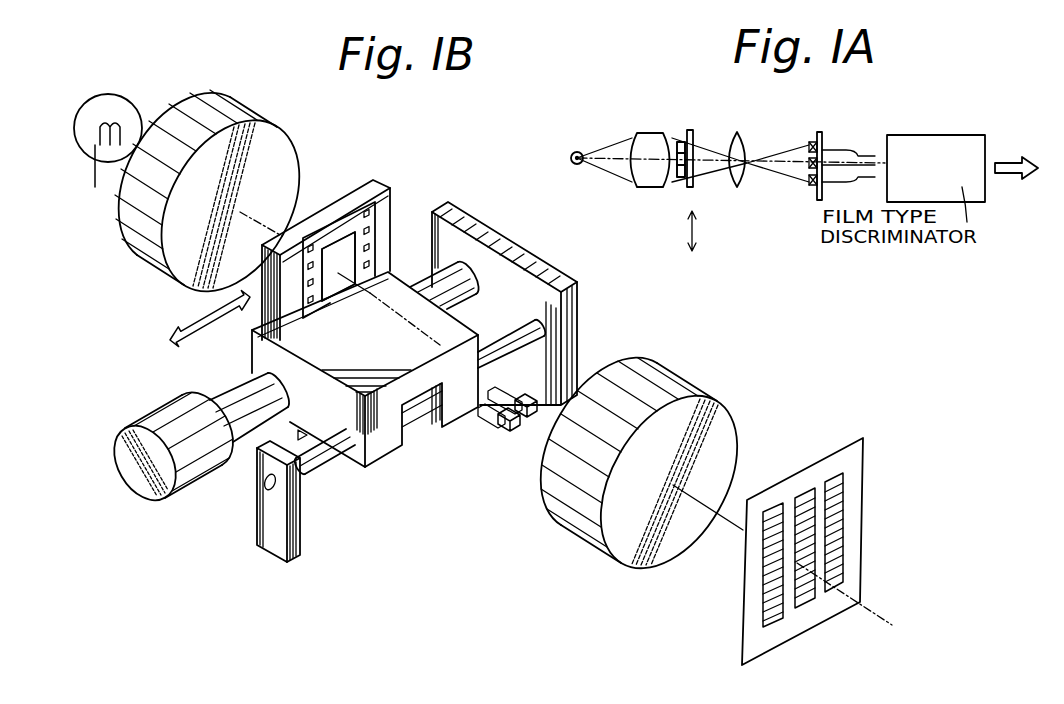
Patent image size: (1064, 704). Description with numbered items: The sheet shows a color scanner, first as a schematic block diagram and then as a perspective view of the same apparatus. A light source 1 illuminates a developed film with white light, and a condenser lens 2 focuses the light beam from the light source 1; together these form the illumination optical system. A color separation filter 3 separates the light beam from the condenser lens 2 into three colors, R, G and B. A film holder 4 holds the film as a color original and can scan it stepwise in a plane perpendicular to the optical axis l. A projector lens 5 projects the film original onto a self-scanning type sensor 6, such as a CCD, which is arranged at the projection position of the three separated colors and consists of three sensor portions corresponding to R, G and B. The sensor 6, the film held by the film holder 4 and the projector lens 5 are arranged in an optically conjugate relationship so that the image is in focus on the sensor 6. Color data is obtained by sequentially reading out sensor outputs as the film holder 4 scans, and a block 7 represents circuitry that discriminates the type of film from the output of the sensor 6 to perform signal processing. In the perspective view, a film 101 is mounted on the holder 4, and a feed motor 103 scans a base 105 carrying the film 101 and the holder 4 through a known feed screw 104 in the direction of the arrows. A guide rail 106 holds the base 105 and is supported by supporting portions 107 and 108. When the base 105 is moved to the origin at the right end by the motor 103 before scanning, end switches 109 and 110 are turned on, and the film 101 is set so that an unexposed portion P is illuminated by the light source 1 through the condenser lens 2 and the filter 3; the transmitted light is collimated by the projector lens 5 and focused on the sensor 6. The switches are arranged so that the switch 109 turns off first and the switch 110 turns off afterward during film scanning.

In FIG. 1A, the light source 1 is at (574, 165).
In FIG. 1B, the light source 1 is at (134, 108).
In FIG. 1A, the condenser lens 2 is at (640, 134).
In FIG. 1B, the condenser lens 2 is at (256, 116).
In FIG. 1A, the color separation filter 3 is at (683, 142).
In FIG. 1B, the color separation filter 3 is at (328, 200).
In FIG. 1A, the film holder 4 is at (693, 135).
In FIG. 1B, the film holder 4 is at (372, 190).
In FIG. 1A, the projector lens 5 is at (740, 187).
In FIG. 1B, the projector lens 5 is at (676, 386).
In FIG. 1A, the self-scanning type sensor 6 is at (822, 134).
In FIG. 1B, the self-scanning type sensor 6 is at (828, 456).
In FIG. 1A, the block 7 is at (958, 135).
In FIG. 1A, the red color R is at (677, 150).
In FIG. 1B, the red color R is at (838, 480).
In FIG. 1A, the green color G is at (674, 176).
In FIG. 1B, the green color G is at (805, 498).
In FIG. 1A, the blue color B is at (680, 180).
In FIG. 1B, the blue color B is at (775, 512).
In FIG. 1A, the optical axis l is at (700, 158).
In FIG. 1B, the optical axis l is at (902, 630).
In FIG. 1B, the unexposed portion P is at (300, 315).
In FIG. 1B, the film 101 is at (405, 205).
In FIG. 1B, the feed motor 103 is at (153, 497).
In FIG. 1B, the feed screw 104 is at (247, 422).
In FIG. 1B, the base 105 is at (381, 392).
In FIG. 1B, the guide rail 106 is at (330, 464).
In FIG. 1B, the supporting portion 107 is at (275, 545).
In FIG. 1B, the supporting portion 108 is at (492, 233).
In FIG. 1B, the end switch 109 is at (525, 418).
In FIG. 1B, the end switch 110 is at (503, 431).